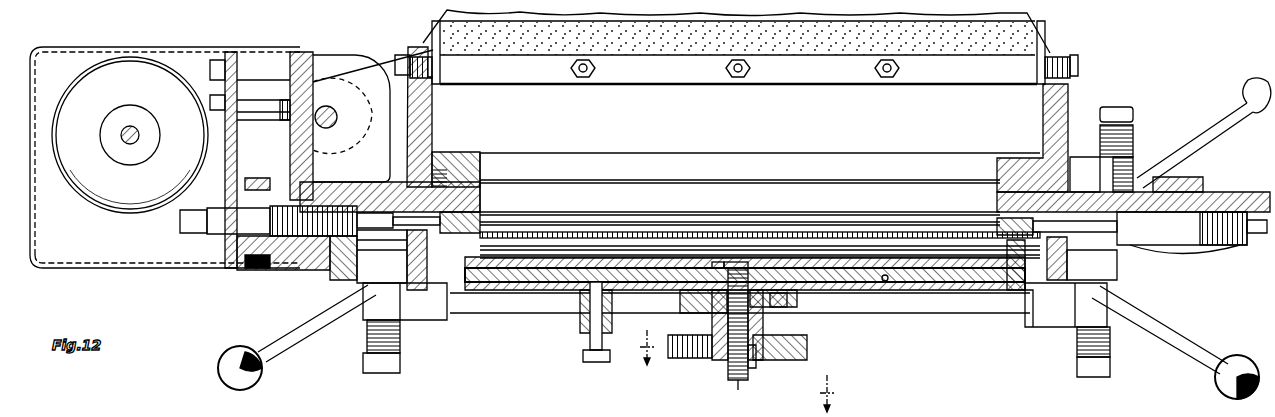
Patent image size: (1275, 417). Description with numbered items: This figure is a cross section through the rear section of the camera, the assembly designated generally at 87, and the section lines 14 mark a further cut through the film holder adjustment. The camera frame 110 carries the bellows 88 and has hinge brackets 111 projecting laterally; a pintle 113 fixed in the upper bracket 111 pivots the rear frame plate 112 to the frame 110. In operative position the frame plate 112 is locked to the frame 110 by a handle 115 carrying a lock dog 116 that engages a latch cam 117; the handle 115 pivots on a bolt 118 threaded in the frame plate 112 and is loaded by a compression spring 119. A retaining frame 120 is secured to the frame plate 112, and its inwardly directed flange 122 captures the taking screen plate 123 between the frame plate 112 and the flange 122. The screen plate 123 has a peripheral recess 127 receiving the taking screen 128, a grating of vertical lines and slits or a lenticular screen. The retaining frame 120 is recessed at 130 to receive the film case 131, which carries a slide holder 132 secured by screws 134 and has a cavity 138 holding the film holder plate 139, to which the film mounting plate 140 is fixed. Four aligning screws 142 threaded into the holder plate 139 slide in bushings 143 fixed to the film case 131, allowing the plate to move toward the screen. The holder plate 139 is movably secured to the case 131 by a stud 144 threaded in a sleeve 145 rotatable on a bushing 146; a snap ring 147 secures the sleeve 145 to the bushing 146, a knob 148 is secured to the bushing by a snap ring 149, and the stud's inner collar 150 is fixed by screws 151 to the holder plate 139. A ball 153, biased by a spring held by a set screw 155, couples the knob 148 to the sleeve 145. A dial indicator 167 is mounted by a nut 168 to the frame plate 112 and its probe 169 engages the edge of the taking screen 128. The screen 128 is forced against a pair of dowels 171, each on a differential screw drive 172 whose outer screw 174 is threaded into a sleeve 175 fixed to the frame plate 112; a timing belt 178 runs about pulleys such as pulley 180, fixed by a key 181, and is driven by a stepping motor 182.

The section line 14 is at (742, 372).
The adjusting mechanism 87 is at (1120, 54).
The bellows 88 is at (793, 40).
The camera frame 110 is at (432, 118).
The hinge bracket 111 is at (378, 62).
The rear frame plate 112 is at (488, 188).
The pintle 113 is at (338, 128).
The handle 115 is at (1204, 123).
The lock dog 116 is at (1086, 155).
The latch cam 117 is at (1040, 153).
The bolt 118 is at (1122, 108).
The compression spring 119 is at (1133, 127).
The retaining frame 120 is at (1092, 265).
The inwardly directed flange 122 is at (1067, 244).
The taking screen plate 123 is at (492, 213).
The peripheral recess 127 is at (997, 204).
The taking screen 128 is at (767, 235).
The recess 130 is at (1058, 290).
The film case 131 is at (928, 272).
The slide holder 132 is at (1015, 290).
The screws 134 is at (1060, 327).
The cavity 138 is at (886, 282).
The film holder plate 139 is at (965, 262).
The film mounting plate 140 is at (955, 290).
The aligning screws 142 is at (596, 362).
The bushings 143 is at (580, 325).
The stud 144 is at (736, 380).
The sleeve 145 is at (765, 360).
The bushing 146 is at (770, 313).
The snap ring 147 is at (790, 303).
The knob 148 is at (807, 348).
The snap ring 149 is at (752, 372).
The collar 150 is at (738, 262).
The screws 151 is at (717, 262).
The ball 153 is at (715, 360).
The set screw 155 is at (688, 358).
The dial indicator 167 is at (1190, 182).
The nut 168 is at (1198, 250).
The probe 169 is at (1117, 226).
The dowels 171 is at (440, 160).
The differential screw drive 172 is at (355, 190).
The outer screw 174 is at (215, 232).
The sleeve 175 is at (278, 270).
The timing belt 178 is at (258, 178).
The pulley 180 is at (250, 268).
The key 181 is at (262, 220).
The stepping motor 182 is at (130, 135).